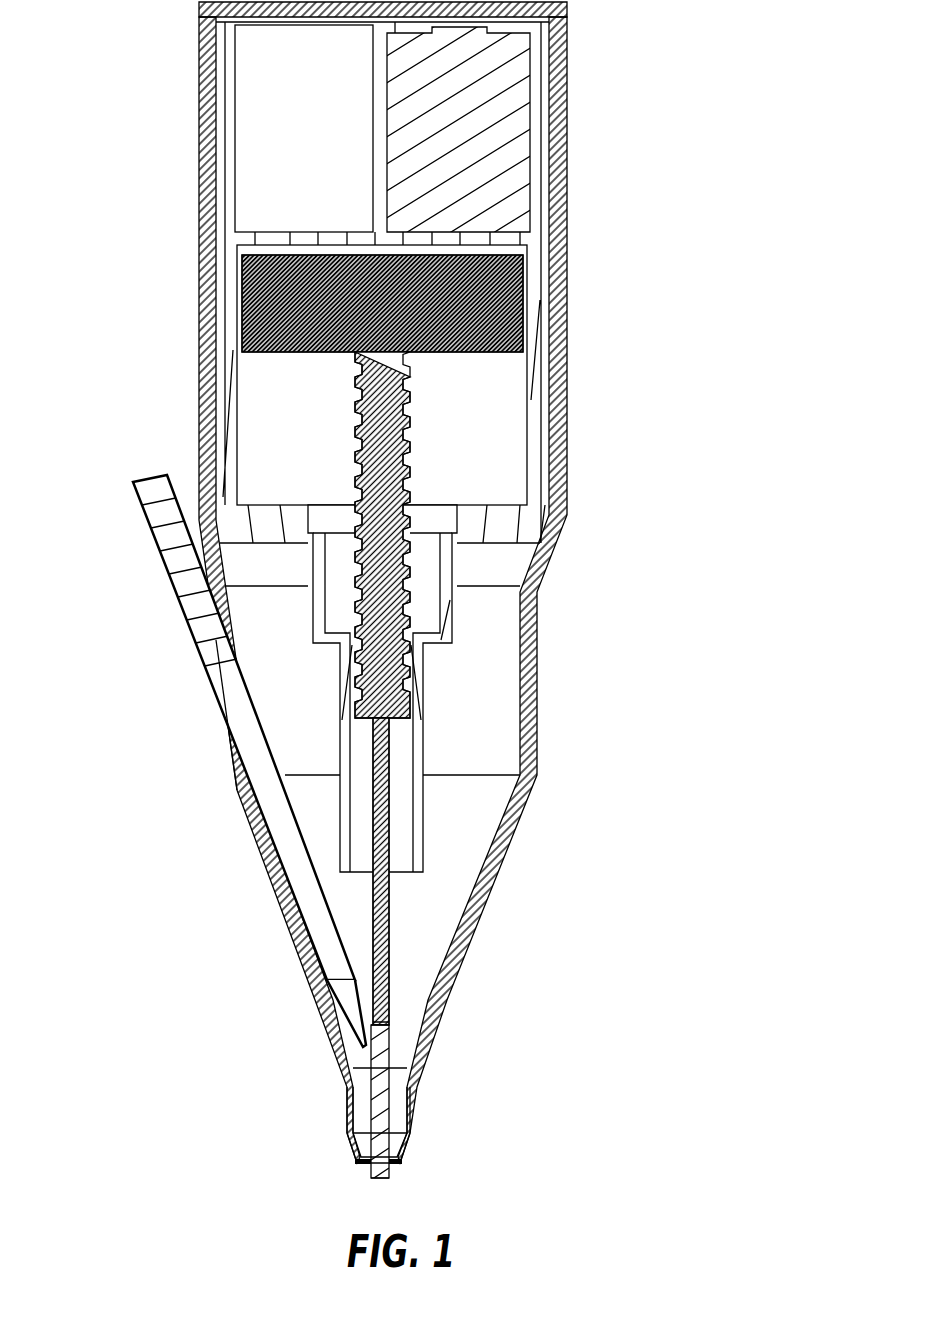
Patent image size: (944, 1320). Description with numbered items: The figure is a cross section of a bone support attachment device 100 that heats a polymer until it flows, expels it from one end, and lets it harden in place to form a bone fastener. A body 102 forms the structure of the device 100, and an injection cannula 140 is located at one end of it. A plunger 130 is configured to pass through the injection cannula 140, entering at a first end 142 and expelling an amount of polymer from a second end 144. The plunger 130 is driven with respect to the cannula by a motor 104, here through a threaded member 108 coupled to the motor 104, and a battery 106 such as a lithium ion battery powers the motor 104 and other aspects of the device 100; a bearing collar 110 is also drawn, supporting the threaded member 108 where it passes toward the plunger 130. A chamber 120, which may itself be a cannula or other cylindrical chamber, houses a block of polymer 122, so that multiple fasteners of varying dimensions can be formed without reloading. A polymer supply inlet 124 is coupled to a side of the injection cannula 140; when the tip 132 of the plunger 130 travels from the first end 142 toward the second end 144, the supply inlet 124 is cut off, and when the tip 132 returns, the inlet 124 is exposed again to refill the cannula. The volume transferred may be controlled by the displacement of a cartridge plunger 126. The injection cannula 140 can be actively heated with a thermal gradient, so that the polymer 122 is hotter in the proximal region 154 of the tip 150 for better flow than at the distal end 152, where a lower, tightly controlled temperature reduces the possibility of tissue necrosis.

The bone support attachment device 100 is at (619, 231).
The body 102 is at (571, 484).
The motor 104 is at (530, 320).
The battery 106 is at (547, 120).
The threaded member 108 is at (360, 432).
The bearing collar 110 is at (342, 568).
The chamber 120 is at (205, 761).
The block of polymer 122 is at (223, 762).
The polymer supply inlet 124 is at (360, 1045).
The cartridge plunger 126 is at (197, 612).
The plunger 130 is at (390, 825).
The tip of the plunger 132 is at (488, 1090).
The injection cannula 140 is at (390, 1067).
The first end of the injection cannula 142 is at (389, 1030).
The second end of the injection cannula 144 is at (389, 1175).
The tip 150 is at (329, 1097).
The distal end of the tip 152 is at (353, 1143).
The proximal region of the tip 154 is at (357, 1070).